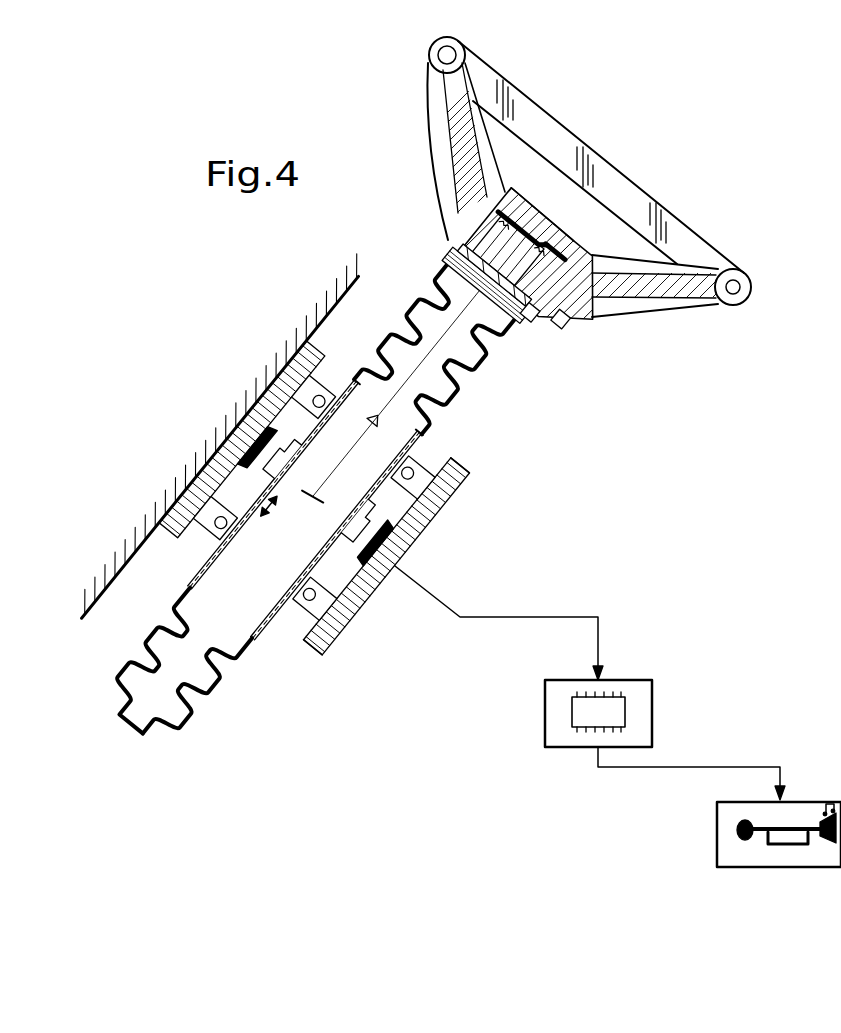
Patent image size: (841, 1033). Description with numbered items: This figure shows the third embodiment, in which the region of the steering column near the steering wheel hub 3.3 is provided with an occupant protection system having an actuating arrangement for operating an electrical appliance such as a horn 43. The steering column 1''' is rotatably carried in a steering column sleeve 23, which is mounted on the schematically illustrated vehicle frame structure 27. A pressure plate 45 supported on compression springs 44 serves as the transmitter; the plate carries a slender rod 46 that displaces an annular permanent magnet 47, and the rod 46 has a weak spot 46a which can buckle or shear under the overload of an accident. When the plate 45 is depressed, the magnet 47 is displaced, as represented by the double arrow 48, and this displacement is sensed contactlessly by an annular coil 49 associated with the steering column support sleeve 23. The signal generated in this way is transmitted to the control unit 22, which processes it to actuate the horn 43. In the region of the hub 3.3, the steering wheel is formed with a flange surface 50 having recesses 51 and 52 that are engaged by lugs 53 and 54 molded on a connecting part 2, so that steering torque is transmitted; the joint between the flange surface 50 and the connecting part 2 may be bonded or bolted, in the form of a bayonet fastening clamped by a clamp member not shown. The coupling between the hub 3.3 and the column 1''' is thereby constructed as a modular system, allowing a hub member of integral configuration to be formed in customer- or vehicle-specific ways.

The steering wheel hub 3.3 is at (573, 280).
The compression springs 44 is at (512, 207).
The flange surface 50 is at (530, 226).
The pressure plate 45 is at (545, 240).
The recess 51 is at (455, 230).
The lug 54 is at (460, 250).
The slender rod 46 is at (390, 337).
The weak spot 46a is at (447, 470).
The annular coil 49 is at (245, 434).
The annular permanent magnet 47 is at (395, 532).
The double arrow 48 is at (258, 497).
The steering column sleeve 23 is at (423, 505).
The vehicle frame structure 27 is at (123, 543).
The steering column 1''' is at (303, 581).
The connecting part 2 is at (514, 305).
The recess 52 is at (560, 318).
The lug 53 is at (528, 315).
The control unit 22 is at (637, 702).
The horn 43 is at (728, 842).